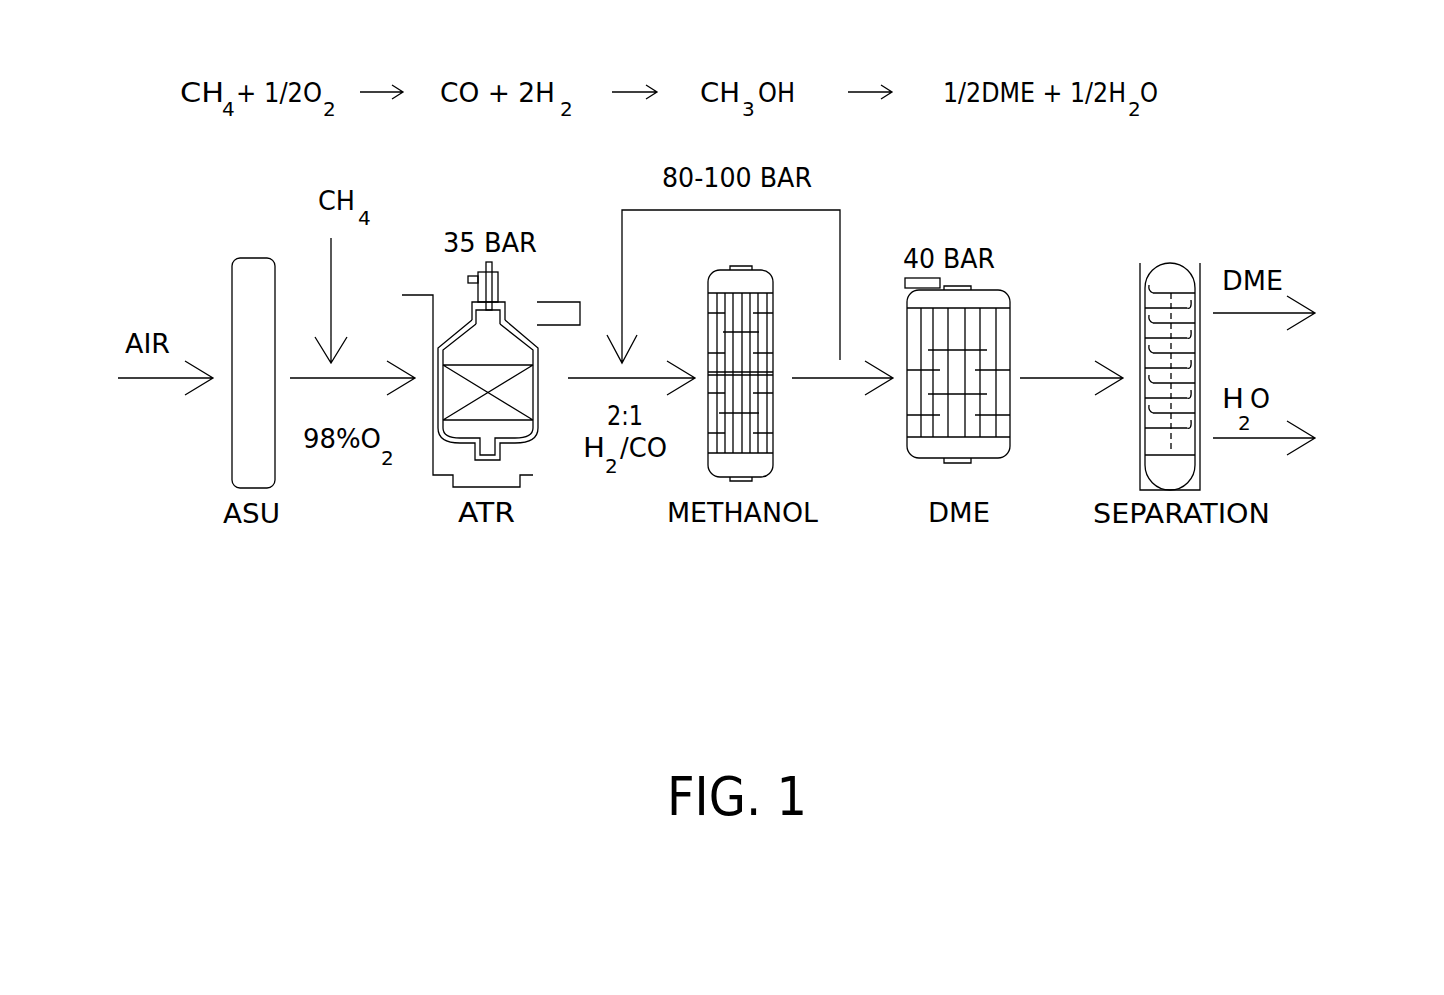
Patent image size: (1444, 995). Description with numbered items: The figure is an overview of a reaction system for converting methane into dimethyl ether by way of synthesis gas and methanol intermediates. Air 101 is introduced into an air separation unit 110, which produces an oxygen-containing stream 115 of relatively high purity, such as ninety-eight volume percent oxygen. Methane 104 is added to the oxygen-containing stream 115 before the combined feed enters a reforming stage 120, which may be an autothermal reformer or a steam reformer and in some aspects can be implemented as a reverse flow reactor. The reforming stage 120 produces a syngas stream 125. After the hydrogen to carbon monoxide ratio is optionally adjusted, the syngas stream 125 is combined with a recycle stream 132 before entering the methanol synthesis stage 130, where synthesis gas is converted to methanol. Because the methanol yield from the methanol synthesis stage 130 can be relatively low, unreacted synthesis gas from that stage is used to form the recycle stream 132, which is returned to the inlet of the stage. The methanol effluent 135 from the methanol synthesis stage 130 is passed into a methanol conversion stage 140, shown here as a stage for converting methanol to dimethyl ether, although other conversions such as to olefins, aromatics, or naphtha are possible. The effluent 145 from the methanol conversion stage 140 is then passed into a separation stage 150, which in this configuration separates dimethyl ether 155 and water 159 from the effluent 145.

The air 101 is at (157, 380).
The methane 104 is at (331, 252).
The air separation unit 110 is at (248, 533).
The oxygen-containing stream 115 is at (352, 455).
The reforming stage 120 is at (490, 532).
The syngas stream 125 is at (598, 497).
The methanol synthesis stage 130 is at (743, 545).
The recycle stream 132 is at (842, 232).
The methanol effluent 135 is at (833, 400).
The methanol conversion stage 140 is at (963, 532).
The effluent 145 is at (1047, 388).
The separation stage 150 is at (1188, 552).
The dimethyl ether 155 is at (1325, 266).
The water 159 is at (1303, 405).